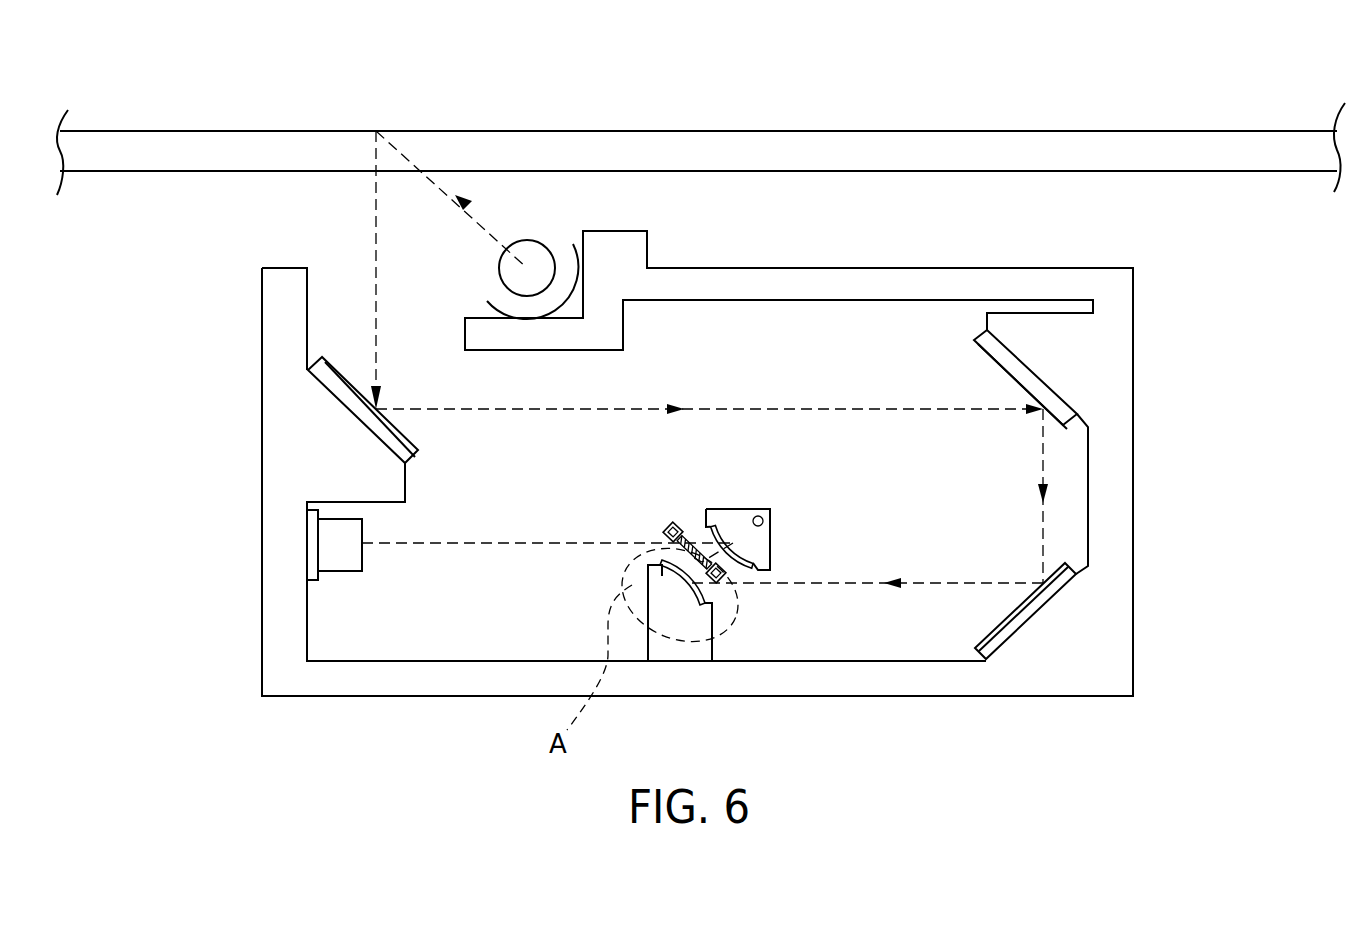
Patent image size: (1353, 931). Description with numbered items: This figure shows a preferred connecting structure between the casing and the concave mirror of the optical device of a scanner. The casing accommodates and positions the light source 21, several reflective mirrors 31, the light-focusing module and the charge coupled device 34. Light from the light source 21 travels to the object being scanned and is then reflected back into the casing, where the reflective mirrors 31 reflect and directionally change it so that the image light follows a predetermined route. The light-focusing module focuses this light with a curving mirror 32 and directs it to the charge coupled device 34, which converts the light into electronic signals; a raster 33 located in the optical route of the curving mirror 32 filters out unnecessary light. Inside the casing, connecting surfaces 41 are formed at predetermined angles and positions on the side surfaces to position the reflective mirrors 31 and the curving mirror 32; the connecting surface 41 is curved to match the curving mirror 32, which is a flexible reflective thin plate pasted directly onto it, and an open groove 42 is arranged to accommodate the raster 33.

The light source 21 is at (532, 240).
The reflective mirror 31 is at (323, 380).
The curving mirror 32 is at (652, 569).
The raster 33 is at (697, 548).
The charge coupled device 34 is at (338, 552).
The connecting surface 41 is at (626, 606).
The open groove 42 is at (668, 531).